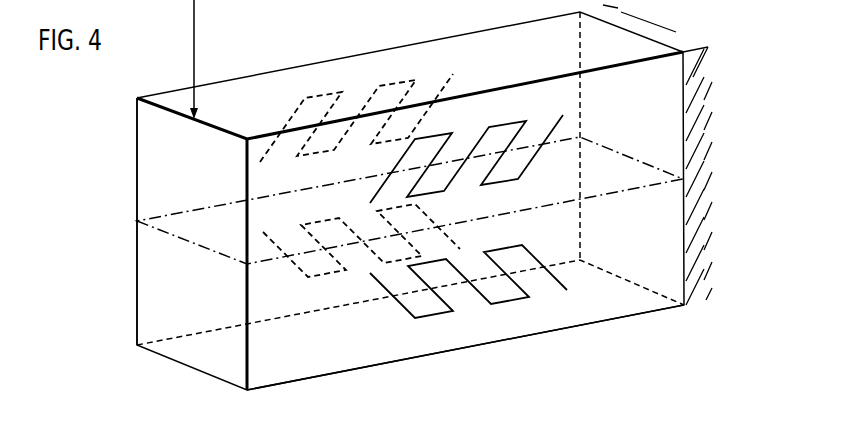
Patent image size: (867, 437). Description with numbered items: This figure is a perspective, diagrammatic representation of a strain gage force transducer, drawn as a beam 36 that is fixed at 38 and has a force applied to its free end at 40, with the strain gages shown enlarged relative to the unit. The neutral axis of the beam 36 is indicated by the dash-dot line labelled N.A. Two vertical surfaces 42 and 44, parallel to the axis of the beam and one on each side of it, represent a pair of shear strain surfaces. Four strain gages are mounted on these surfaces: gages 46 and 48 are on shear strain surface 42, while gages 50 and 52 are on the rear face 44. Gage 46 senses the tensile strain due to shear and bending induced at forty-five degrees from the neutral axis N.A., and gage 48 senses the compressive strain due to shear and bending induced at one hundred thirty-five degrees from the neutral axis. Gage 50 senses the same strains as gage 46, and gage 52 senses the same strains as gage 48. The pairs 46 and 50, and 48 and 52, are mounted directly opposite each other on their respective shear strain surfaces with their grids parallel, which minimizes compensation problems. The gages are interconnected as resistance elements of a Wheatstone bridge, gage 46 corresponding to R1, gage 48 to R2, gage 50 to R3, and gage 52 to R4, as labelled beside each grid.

The beam 36 is at (125, 282).
The fixed end 38 is at (703, 98).
The free end force application point 40 is at (195, 40).
The shear strain surface 42 is at (312, 360).
The shear strain surface 44 is at (163, 172).
The strain gage 46 is at (504, 150).
The strain gage 48 is at (507, 276).
The strain gage 50 is at (371, 111).
The strain gage 52 is at (376, 254).
The resistance element R1 is at (527, 163).
The resistance element R2 is at (522, 245).
The resistance element R3 is at (453, 76).
The resistance element R4 is at (451, 238).
The neutral axis N.A. is at (690, 176).